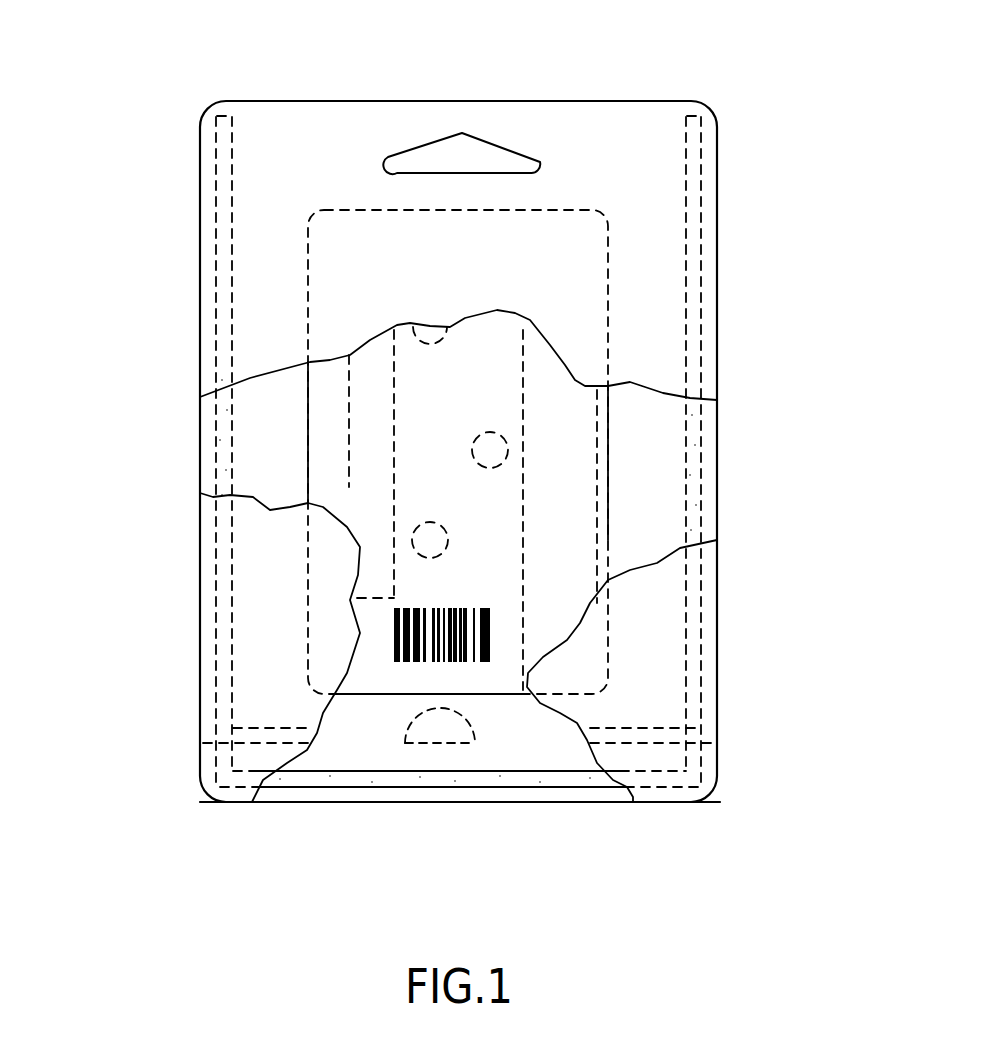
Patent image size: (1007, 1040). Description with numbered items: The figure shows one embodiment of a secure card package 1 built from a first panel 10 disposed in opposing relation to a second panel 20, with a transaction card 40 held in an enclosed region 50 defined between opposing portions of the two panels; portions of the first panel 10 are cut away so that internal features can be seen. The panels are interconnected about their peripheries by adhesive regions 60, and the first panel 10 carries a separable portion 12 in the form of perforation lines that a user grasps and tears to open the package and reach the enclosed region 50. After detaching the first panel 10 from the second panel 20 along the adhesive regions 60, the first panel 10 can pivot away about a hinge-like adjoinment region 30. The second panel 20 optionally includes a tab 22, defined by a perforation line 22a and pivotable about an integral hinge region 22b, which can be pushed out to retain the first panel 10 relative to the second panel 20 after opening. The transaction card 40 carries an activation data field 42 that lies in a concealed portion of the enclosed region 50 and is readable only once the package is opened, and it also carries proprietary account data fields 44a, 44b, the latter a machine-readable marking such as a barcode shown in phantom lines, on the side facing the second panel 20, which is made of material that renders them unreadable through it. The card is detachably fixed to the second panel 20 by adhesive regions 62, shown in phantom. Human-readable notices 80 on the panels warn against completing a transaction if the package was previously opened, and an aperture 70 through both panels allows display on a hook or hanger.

The secure card package 1 is at (662, 45).
The first panel 10 is at (451, 451).
The separable portion 12 is at (478, 712).
The second panel 20 is at (458, 455).
The tab 22 is at (440, 723).
The perforation line 22a is at (394, 785).
The integral hinge region 22b is at (441, 803).
The hinge-like adjoinment region 30 is at (460, 73).
The transaction card 40 is at (465, 452).
The activation data field 42 is at (579, 630).
The proprietary account data field 44a is at (186, 421).
The proprietary account data field 44b is at (692, 490).
The enclosed region 50 is at (337, 742).
The adhesive regions 60 is at (452, 492).
The adhesive regions 62 is at (473, 460).
The aperture 70 is at (479, 77).
The human-readable notices 80 is at (430, 403).